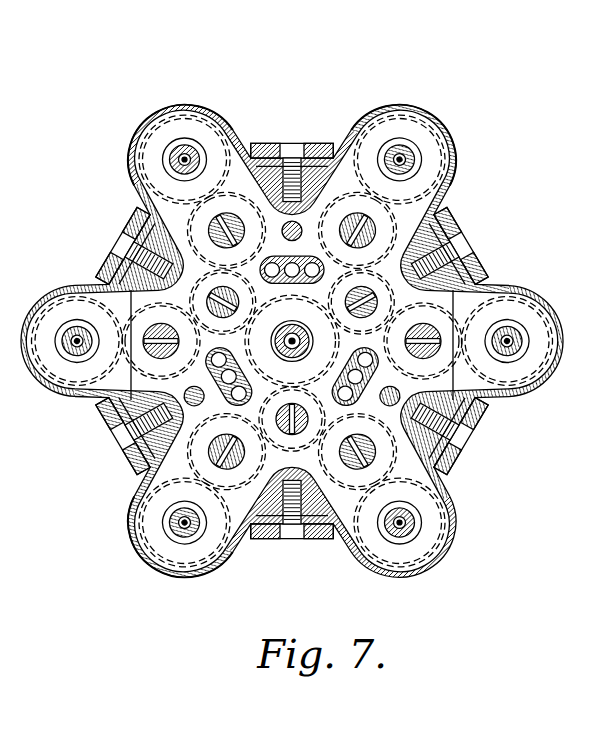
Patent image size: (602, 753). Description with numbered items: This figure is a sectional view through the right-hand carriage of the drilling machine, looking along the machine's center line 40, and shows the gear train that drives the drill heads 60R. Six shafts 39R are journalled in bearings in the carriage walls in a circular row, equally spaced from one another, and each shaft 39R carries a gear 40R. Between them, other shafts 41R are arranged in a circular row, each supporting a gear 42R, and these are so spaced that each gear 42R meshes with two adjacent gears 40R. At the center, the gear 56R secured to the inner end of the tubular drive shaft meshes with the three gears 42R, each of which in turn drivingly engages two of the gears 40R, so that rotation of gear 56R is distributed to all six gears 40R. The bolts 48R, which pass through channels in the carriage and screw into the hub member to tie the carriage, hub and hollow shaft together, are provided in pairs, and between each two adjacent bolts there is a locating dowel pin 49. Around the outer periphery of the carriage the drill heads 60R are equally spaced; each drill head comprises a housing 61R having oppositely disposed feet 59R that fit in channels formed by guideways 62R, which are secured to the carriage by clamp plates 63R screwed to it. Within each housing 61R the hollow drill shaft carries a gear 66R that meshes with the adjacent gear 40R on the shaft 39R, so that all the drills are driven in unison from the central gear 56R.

The gear unit casing 40 is at (130, 378).
The shaft 39R is at (232, 225).
The gear 40R is at (187, 220).
The shaft 41R is at (240, 283).
The gear 42R is at (250, 280).
The bolt 48R is at (310, 272).
The locating dowel pin 49 is at (292, 265).
The gear 56R is at (318, 385).
The feet 59R is at (258, 162).
The drill head 60R is at (453, 150).
The housing 61R is at (186, 102).
The guideway 62R is at (275, 168).
The clamp plate 63R is at (312, 147).
The gear 66R is at (442, 123).